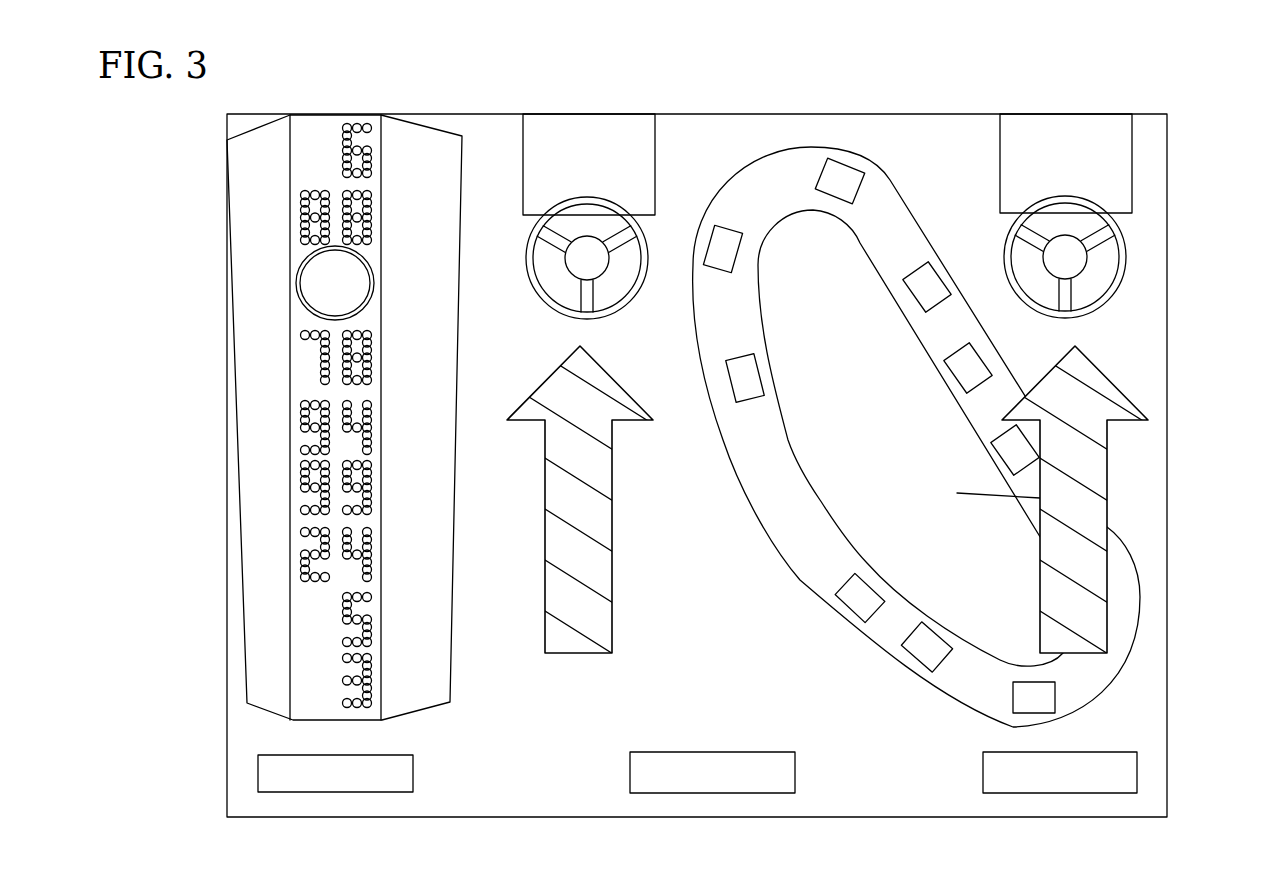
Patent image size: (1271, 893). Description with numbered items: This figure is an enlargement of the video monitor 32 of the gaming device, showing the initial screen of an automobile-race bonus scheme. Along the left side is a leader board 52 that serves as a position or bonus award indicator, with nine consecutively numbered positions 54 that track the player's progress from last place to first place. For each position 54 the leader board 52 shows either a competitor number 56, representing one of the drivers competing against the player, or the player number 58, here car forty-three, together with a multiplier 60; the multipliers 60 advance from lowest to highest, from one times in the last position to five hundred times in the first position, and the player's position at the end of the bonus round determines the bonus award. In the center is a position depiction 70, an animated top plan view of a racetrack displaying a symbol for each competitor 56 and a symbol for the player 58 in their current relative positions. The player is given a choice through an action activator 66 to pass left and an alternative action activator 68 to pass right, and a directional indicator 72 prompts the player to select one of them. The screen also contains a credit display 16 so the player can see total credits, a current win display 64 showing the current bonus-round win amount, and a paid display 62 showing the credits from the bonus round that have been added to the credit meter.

The credit display 16 is at (273, 792).
The video monitor 32 is at (907, 114).
The leader board 52 is at (227, 152).
The positions 54 is at (255, 478).
The competitor numbers 56 is at (305, 564).
The player number 58 is at (298, 270).
The multipliers 60 is at (414, 153).
The paid display 62 is at (1070, 793).
The current win display 64 is at (762, 793).
The action activator 66 is at (596, 114).
The alternative action activator 68 is at (1085, 114).
The position depiction 70 is at (1140, 615).
The directional indicator 72 is at (1107, 450).